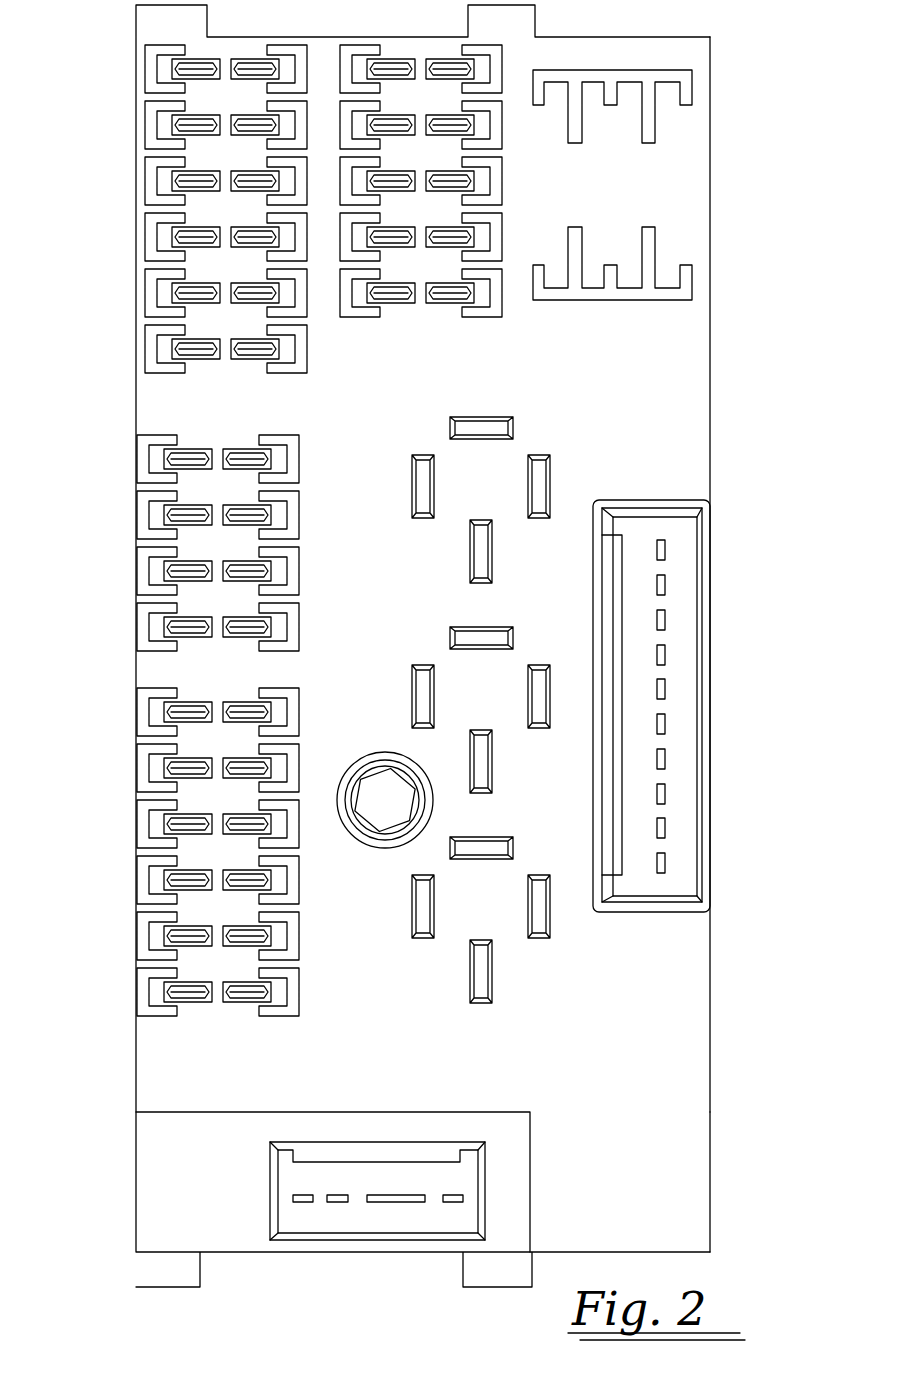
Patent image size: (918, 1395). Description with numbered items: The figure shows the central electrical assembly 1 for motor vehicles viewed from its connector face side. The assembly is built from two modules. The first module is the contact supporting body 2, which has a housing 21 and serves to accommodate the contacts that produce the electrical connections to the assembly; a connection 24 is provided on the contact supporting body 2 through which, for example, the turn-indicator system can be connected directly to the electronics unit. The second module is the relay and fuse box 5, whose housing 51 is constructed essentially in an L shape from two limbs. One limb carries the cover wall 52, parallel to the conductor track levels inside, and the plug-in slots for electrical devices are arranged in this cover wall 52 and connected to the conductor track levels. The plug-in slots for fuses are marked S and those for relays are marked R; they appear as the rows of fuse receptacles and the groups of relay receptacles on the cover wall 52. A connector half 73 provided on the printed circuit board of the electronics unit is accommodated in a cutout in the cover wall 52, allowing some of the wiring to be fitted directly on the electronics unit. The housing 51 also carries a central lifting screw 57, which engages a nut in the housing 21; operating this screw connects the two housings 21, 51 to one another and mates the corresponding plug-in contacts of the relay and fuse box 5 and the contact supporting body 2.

The central electrical assembly 1 is at (112, 398).
The contact supporting body 2 is at (223, 1283).
The relay and fuse box 5 is at (745, 1151).
The housing 21 is at (280, 1243).
The connection 24 is at (365, 1218).
The housing 51 is at (680, 386).
The cover wall 52 is at (677, 1011).
The central lifting screw 57 is at (380, 775).
The connector half 73 is at (680, 767).
The plug-in slots for fuses S is at (221, 368).
The plug-in slots for relays R is at (467, 680).